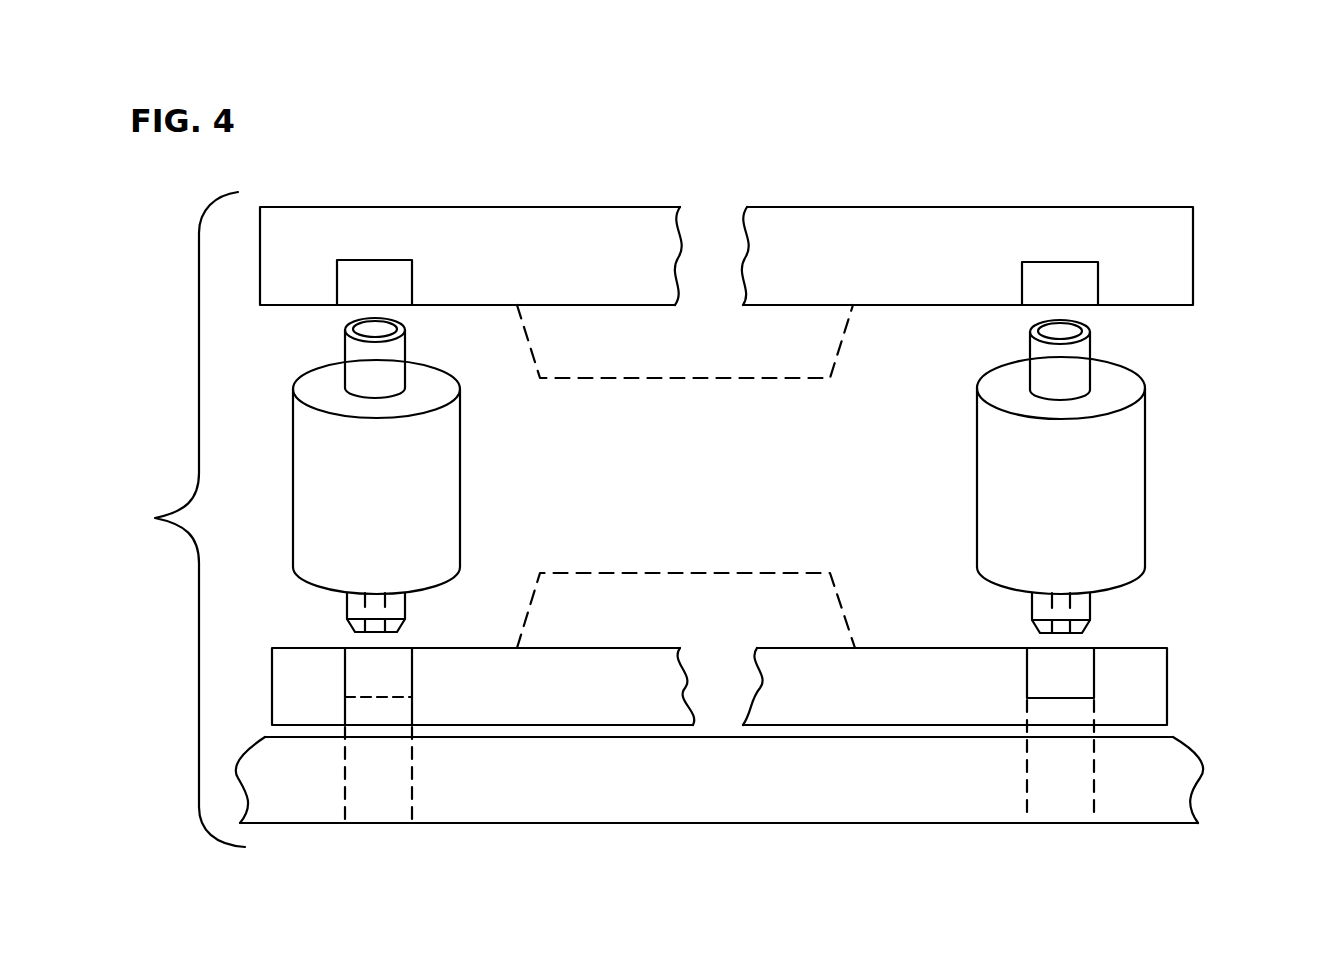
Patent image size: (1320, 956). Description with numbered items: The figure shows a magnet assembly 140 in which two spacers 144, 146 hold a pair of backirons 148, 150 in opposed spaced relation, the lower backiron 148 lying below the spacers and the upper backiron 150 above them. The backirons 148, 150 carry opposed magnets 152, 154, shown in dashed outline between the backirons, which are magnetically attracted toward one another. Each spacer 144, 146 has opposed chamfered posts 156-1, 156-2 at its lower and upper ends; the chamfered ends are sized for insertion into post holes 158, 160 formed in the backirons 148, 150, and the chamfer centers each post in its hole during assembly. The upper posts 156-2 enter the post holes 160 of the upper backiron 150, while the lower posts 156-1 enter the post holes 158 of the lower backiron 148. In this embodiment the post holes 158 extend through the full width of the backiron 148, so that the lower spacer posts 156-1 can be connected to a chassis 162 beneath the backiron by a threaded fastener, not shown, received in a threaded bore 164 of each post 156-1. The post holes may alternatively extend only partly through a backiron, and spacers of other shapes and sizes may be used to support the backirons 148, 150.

The magnet assembly 140 is at (955, 188).
The spacer 144 is at (453, 478).
The spacer 146 is at (985, 470).
The backiron 148 is at (1153, 667).
The backiron 150 is at (1113, 208).
The magnet 152 is at (712, 573).
The magnet 154 is at (730, 378).
The chamfered post 156-1 is at (405, 603).
The chamfered post 156-2 is at (383, 365).
The post hole 158 is at (410, 670).
The post hole 160 is at (413, 282).
The chassis 162 is at (1168, 790).
The threaded bore 164 is at (392, 597).